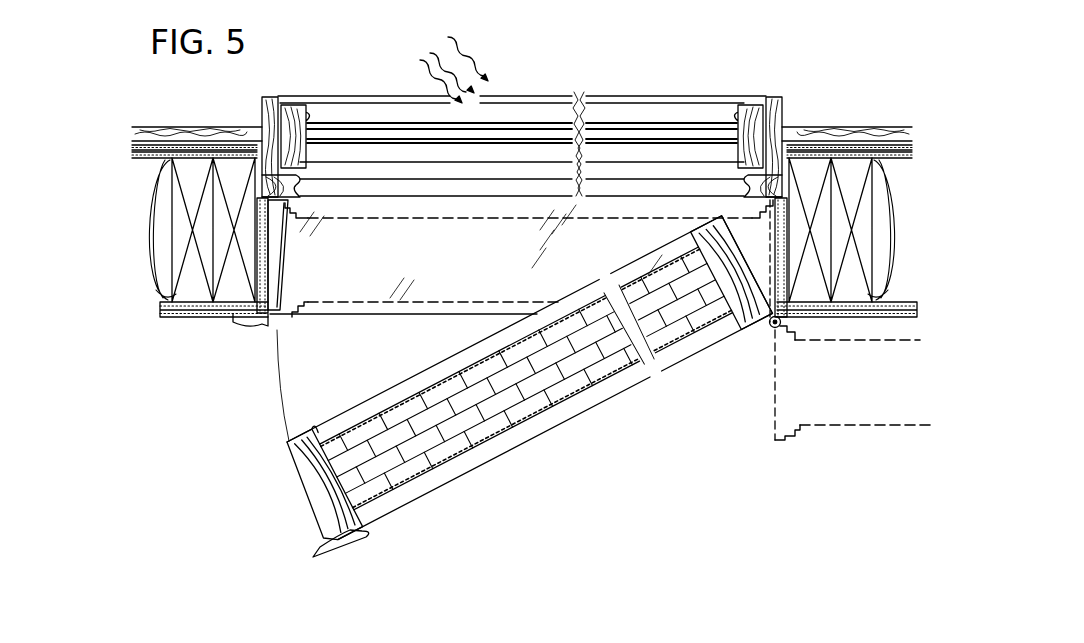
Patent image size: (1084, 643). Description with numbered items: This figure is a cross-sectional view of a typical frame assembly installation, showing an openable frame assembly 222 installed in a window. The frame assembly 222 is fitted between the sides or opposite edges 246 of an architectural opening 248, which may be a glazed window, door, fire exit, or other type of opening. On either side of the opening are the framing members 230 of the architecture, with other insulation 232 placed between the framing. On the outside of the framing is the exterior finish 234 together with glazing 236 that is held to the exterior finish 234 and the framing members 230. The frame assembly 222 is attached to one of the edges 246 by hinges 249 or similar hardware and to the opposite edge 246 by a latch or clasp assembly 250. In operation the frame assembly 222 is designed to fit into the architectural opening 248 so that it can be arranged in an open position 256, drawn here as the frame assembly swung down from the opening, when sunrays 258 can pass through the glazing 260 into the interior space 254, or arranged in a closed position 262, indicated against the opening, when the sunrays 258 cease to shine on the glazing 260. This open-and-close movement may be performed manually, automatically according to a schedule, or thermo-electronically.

The frame assembly 222 is at (435, 338).
The framing members 230 is at (222, 206).
The insulation 232 is at (153, 225).
The exterior finish 234 is at (156, 125).
The glazing 236 is at (196, 322).
The edges of architectural opening 246 is at (275, 250).
The architectural opening 248 is at (306, 113).
The hinges 249 is at (763, 336).
The latch or clasp assembly 250 is at (248, 328).
The interior space 254 is at (655, 474).
The open position 256 is at (872, 328).
The sunrays 258 is at (439, 59).
The glazing 260 is at (630, 139).
The closed position 262 is at (473, 318).